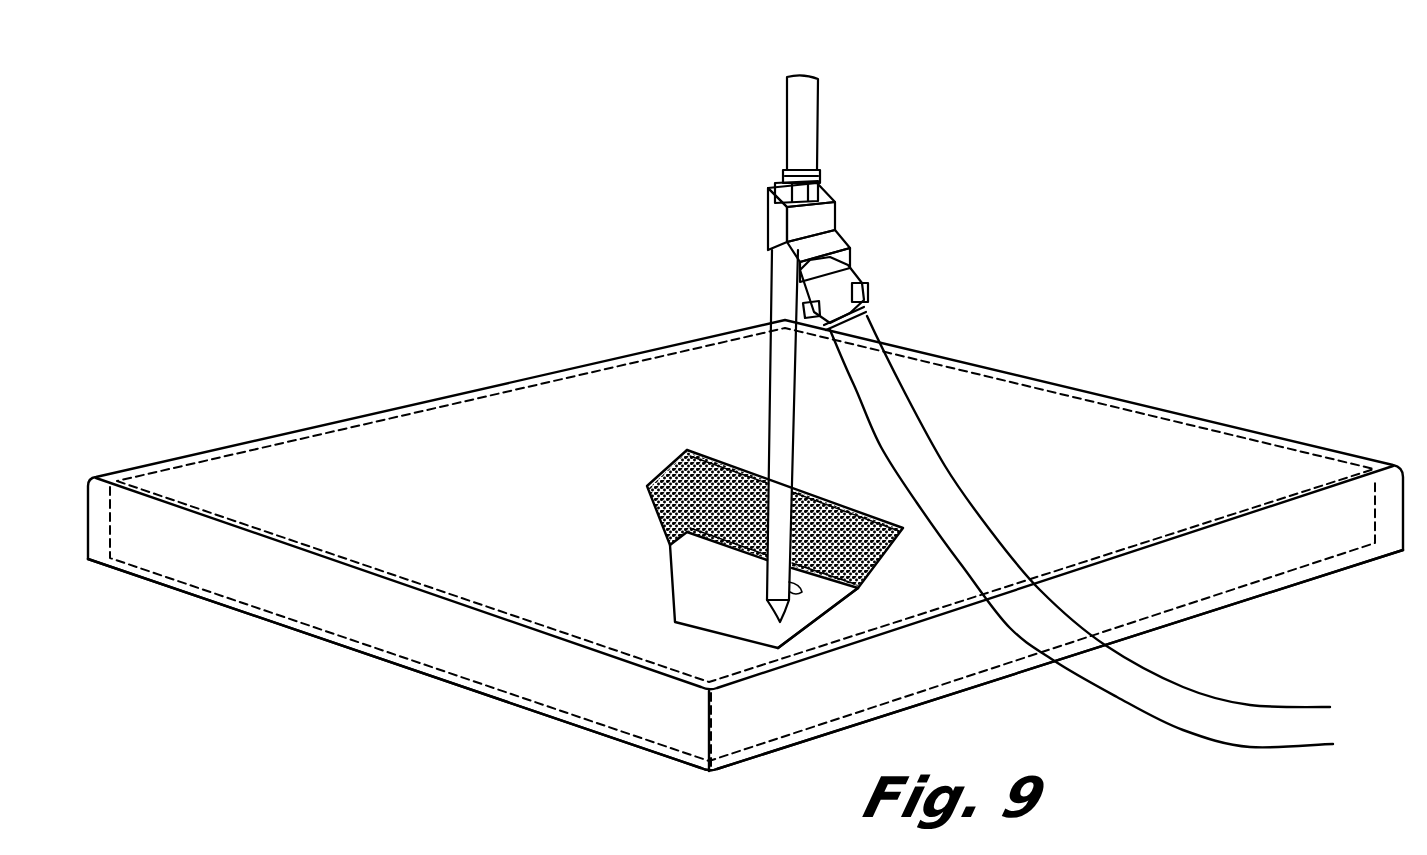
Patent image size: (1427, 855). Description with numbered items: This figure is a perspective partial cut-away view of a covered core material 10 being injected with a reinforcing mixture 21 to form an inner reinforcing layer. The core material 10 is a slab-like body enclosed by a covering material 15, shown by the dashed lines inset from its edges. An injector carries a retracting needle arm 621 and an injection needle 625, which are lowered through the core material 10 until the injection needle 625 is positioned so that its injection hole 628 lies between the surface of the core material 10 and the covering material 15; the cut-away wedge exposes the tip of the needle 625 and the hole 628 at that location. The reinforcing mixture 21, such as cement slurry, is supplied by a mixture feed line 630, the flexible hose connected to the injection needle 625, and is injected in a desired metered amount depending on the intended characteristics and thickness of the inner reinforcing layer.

The covered core material 10 is at (647, 486).
The covering material 15 is at (440, 682).
The reinforcing mixture 21 is at (807, 593).
The retracting needle arm 621 is at (783, 300).
The injection needle 625 is at (757, 583).
The injection hole 628 is at (798, 604).
The mixture feed line 630 is at (900, 398).